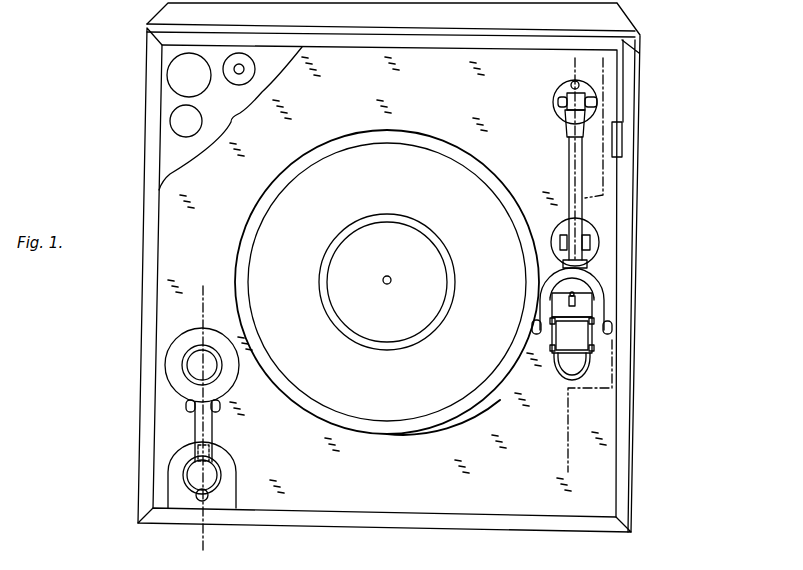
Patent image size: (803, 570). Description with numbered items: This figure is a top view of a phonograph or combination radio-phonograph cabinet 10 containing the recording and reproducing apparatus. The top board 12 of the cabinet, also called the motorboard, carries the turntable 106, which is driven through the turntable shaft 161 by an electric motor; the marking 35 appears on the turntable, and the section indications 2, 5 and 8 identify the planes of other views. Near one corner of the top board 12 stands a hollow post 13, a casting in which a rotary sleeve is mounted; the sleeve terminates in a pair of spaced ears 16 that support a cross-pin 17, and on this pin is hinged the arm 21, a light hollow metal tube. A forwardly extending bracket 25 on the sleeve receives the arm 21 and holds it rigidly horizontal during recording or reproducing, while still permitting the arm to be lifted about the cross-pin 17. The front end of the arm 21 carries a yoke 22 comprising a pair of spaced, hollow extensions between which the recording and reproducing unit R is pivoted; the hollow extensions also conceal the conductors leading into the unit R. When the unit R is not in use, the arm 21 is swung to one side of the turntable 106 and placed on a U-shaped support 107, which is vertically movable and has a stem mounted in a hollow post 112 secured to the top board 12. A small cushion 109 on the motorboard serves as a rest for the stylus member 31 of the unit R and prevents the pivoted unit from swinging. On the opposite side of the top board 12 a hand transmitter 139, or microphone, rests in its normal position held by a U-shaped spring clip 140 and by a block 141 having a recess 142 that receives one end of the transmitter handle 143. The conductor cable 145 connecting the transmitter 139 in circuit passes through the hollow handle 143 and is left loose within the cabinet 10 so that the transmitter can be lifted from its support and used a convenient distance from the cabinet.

The cabinet 10 is at (146, 140).
The top board 12 is at (538, 506).
The turntable 35 is at (413, 141).
The turntable 106 is at (492, 386).
The turntable shaft 161 is at (385, 284).
The section line 5- 5 is at (206, 295).
The hand transmitter 139 is at (219, 388).
The spring clip 140 is at (192, 405).
The transmitter handle 143 is at (200, 423).
The block 141 is at (236, 466).
The recess 142 is at (186, 472).
The conductor cable 145 is at (198, 495).
The stylus member 31 is at (202, 563).
The hollow post 13 is at (571, 85).
The cross-pin 17 is at (566, 103).
The ears 16 is at (562, 107).
The section line 8- 8 is at (578, 63).
The arm 21 is at (577, 180).
The bracket 25 is at (585, 130).
The section line 2- 2 is at (605, 66).
The hollow post 112 is at (585, 230).
The support 107 is at (588, 247).
The yoke 22 is at (550, 288).
The recording and reproducing unit R is at (595, 343).
The cushion 109 is at (565, 376).